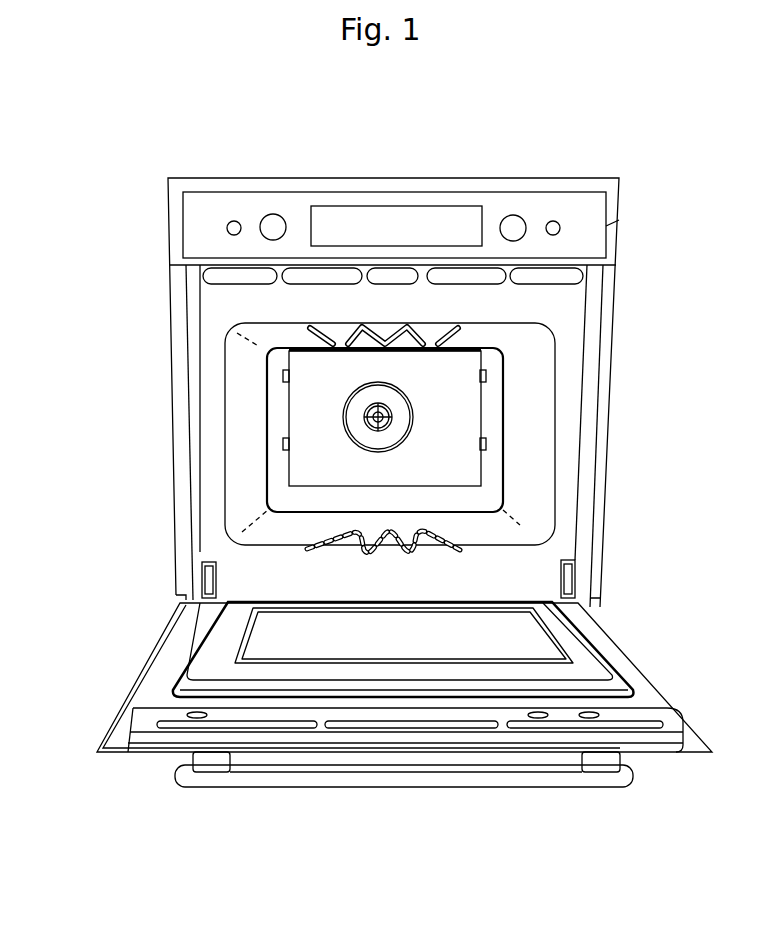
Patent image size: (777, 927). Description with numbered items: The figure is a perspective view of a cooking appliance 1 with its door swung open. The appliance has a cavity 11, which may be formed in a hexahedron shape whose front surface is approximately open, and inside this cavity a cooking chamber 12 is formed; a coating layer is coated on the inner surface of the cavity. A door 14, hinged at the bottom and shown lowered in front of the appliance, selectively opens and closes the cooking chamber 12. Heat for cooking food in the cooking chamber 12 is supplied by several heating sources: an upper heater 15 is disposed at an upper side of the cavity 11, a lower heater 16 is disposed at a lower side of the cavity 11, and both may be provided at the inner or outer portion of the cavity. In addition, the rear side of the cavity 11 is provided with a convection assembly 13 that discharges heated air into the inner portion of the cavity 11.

The cooking appliance 1 is at (118, 146).
The cavity 11 is at (252, 480).
The cooking chamber 12 is at (275, 335).
The convection assembly 13 is at (330, 417).
The door 14 is at (130, 670).
The upper heater 15 is at (512, 348).
The lower heater 16 is at (457, 543).